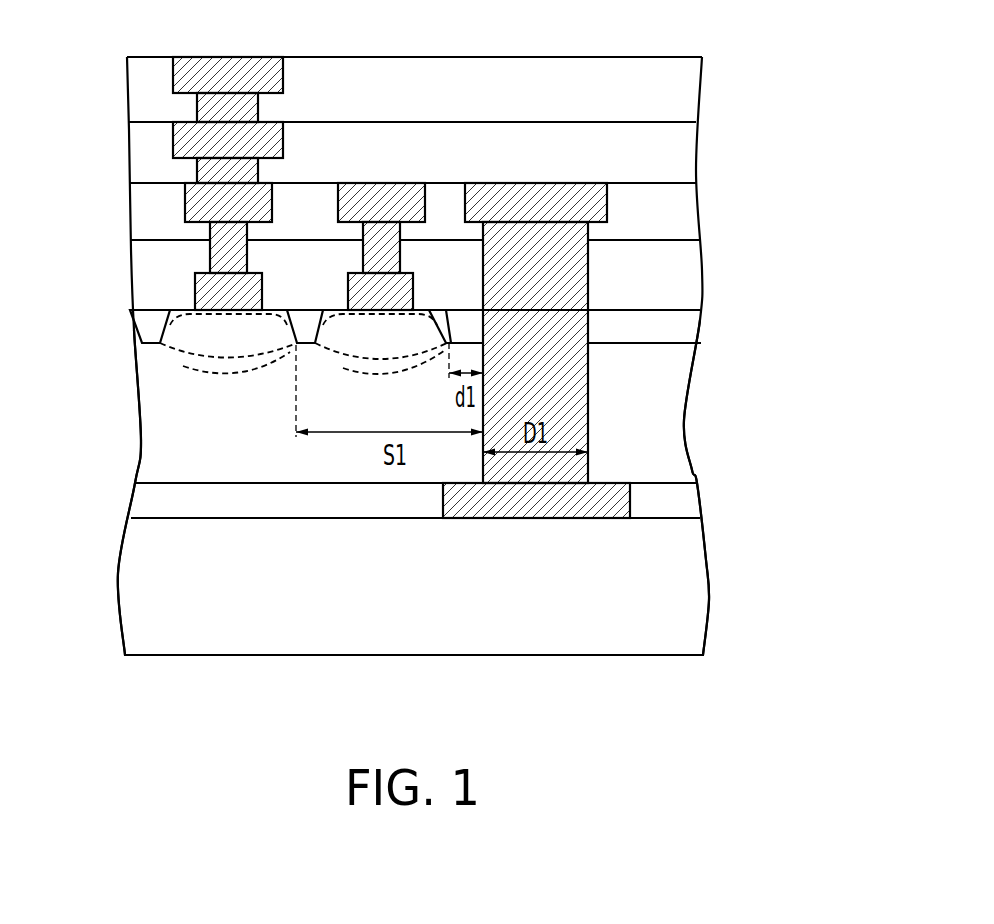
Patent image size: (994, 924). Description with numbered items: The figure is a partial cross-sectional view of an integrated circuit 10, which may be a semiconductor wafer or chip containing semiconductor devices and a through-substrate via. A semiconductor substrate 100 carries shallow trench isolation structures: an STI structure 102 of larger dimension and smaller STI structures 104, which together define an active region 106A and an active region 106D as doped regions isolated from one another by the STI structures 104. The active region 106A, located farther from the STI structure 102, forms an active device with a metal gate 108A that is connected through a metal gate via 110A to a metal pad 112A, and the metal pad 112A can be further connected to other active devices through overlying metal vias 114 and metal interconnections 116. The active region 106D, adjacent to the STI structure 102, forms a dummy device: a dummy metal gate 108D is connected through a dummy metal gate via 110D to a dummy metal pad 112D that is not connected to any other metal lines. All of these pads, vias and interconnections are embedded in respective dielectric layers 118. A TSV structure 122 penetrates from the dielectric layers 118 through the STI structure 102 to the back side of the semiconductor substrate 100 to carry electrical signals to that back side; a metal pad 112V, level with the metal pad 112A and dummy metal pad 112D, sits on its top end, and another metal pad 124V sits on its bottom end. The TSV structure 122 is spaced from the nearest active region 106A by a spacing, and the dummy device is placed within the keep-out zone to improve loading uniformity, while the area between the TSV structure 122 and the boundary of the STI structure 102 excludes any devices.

The integrated circuit 10 is at (782, 718).
The semiconductor substrate 100 is at (656, 433).
The STI structure 102 is at (667, 330).
The STI structures 104 is at (143, 328).
The active region 106A is at (183, 366).
The active region 106D is at (343, 368).
The metal gate 108A is at (205, 291).
The dummy metal gate 108D is at (395, 297).
The metal gate via 110A is at (217, 252).
The dummy metal gate via 110D is at (393, 262).
The metal pad 112A is at (198, 205).
The dummy metal pad 112D is at (393, 200).
The metal pad 112V is at (523, 200).
The metal vias 114 is at (247, 175).
The metal interconnections 116 is at (198, 140).
The dielectric layers 118 is at (660, 93).
The TSV structure 122 is at (570, 373).
The metal pad 124V is at (597, 507).